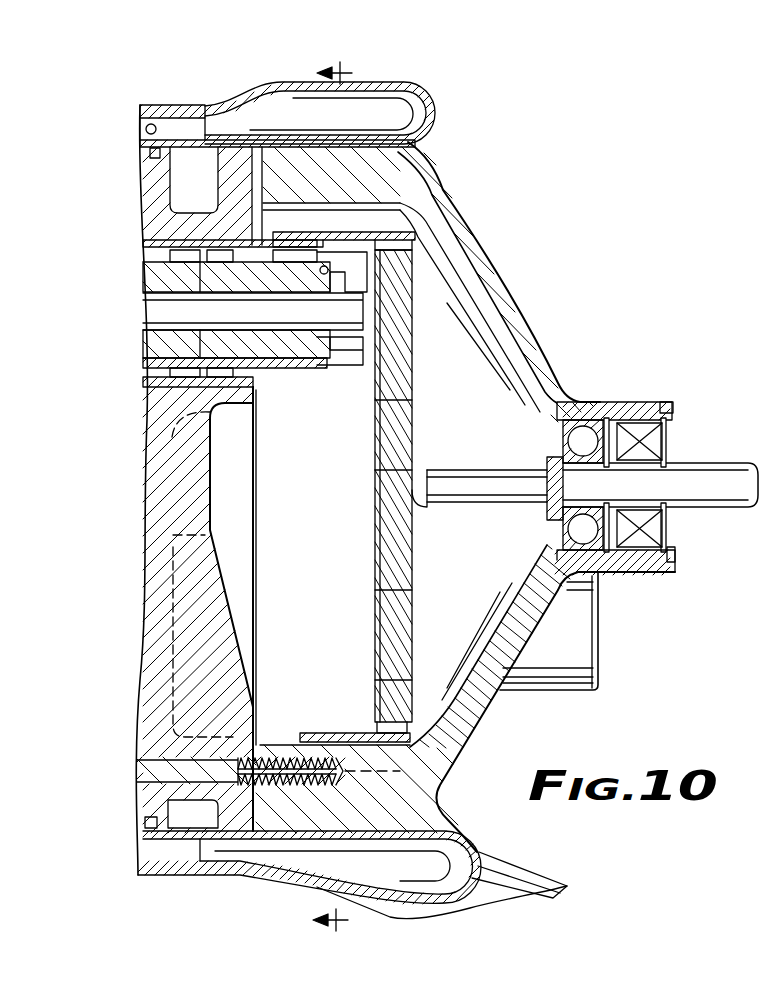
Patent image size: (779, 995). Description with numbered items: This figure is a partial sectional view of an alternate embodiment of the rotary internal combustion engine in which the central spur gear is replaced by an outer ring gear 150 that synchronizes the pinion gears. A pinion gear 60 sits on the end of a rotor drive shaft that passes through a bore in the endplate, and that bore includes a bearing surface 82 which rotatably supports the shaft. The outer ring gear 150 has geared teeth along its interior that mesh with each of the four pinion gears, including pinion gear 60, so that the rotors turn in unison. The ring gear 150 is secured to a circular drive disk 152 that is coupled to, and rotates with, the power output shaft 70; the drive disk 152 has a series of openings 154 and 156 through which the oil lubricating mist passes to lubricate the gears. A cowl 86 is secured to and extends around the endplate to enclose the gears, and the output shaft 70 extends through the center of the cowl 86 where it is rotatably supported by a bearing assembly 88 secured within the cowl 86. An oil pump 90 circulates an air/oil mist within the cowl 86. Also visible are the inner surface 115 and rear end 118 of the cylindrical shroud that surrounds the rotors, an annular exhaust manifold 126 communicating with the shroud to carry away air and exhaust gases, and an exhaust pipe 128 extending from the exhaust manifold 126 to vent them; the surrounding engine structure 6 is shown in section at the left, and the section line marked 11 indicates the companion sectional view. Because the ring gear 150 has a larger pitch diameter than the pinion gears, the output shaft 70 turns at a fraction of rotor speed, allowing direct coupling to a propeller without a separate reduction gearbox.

The housing wall 6 is at (152, 448).
The section line 11- 11 is at (347, 497).
The pinion gear 60 is at (297, 372).
The power output shaft 70 is at (467, 503).
The bearing surface 82 is at (186, 250).
The cowl 86 is at (512, 300).
The bearing assembly 88 is at (592, 426).
The oil pump 90 is at (598, 655).
The inner surface of shroud 115 is at (152, 116).
The rear end of shroud 118 is at (210, 80).
The exhaust manifold 126 is at (426, 119).
The exhaust pipe 128 is at (520, 868).
The outer ring gear 150 is at (333, 196).
The drive disk 152 is at (400, 447).
The opening 154 is at (398, 390).
The opening 156 is at (394, 614).